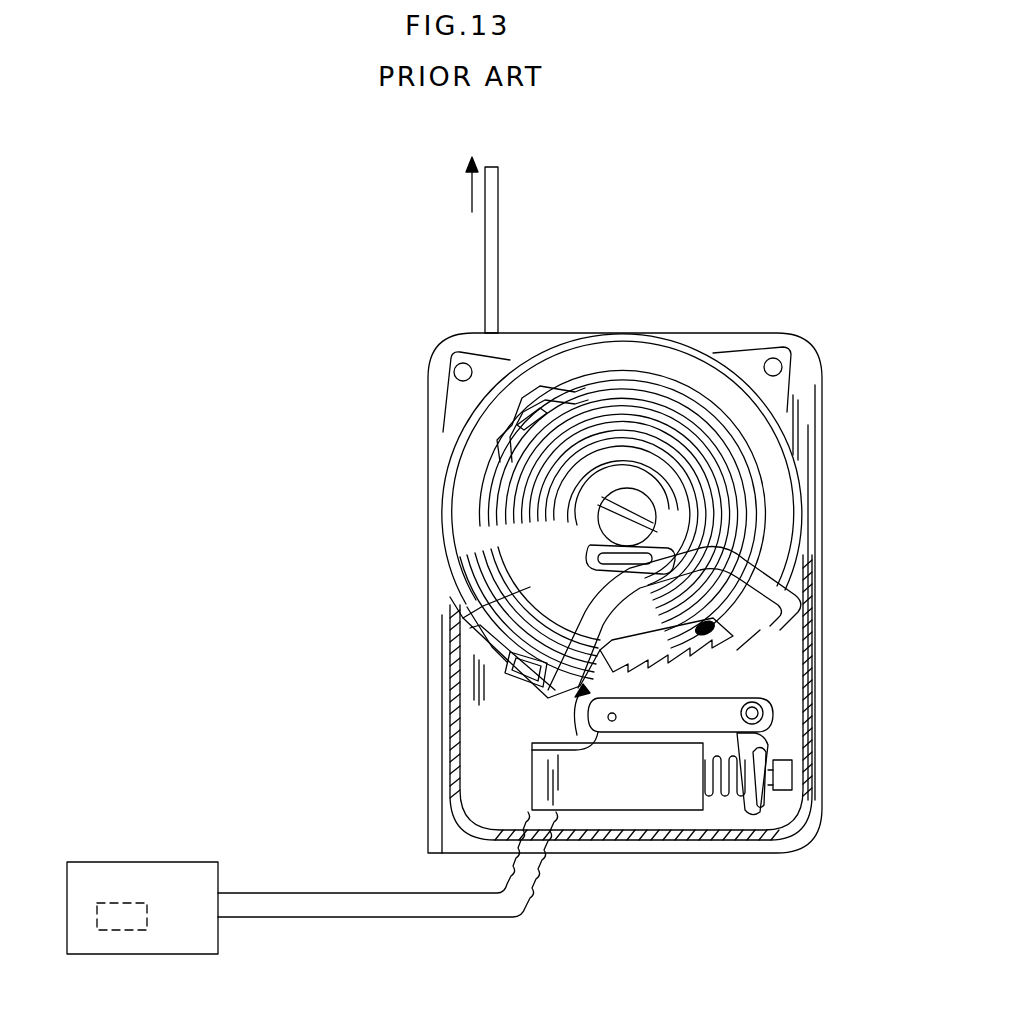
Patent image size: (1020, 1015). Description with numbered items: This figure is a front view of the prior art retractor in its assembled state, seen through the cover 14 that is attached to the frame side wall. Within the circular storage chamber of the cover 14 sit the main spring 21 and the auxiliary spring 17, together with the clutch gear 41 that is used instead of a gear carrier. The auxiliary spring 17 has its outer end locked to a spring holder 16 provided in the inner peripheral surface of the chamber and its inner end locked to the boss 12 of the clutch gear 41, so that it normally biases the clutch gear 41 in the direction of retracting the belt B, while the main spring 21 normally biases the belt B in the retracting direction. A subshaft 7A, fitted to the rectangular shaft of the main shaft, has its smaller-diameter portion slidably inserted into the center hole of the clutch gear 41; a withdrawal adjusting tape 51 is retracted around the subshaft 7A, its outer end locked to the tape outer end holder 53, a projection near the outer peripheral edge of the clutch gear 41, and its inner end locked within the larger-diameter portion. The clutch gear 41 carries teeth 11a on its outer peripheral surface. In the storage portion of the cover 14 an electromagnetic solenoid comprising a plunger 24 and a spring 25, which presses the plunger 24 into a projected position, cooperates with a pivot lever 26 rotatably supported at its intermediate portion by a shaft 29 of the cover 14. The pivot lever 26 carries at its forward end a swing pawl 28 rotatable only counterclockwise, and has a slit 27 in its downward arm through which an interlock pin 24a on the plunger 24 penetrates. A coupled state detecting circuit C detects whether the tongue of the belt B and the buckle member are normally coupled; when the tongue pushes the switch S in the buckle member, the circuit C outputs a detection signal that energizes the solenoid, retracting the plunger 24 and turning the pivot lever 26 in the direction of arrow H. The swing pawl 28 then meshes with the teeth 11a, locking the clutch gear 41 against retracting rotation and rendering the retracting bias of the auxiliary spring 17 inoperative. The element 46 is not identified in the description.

The cover 14 is at (622, 313).
The belt B is at (498, 200).
The main spring 21 is at (678, 412).
The boss 12 is at (598, 505).
The subshaft 7A is at (658, 513).
The withdrawal adjusting tape 51 is at (795, 560).
The teeth 11a is at (720, 668).
The tape outer end holder 53 is at (714, 630).
The clutch gear 41 is at (585, 607).
The auxiliary spring 17 is at (498, 626).
The spring holder 16 is at (512, 667).
The arrow H is at (566, 709).
The swing pawl 28 is at (532, 750).
The shaft 29 is at (763, 715).
The solenoid 46 is at (545, 778).
The spring 25 is at (733, 852).
The pivot lever 26 is at (682, 852).
The slit 27 is at (778, 852).
The plunger 24 is at (787, 776).
The interlock pin 24a is at (806, 828).
The coupled state detecting circuit C is at (192, 862).
The switch S is at (145, 930).